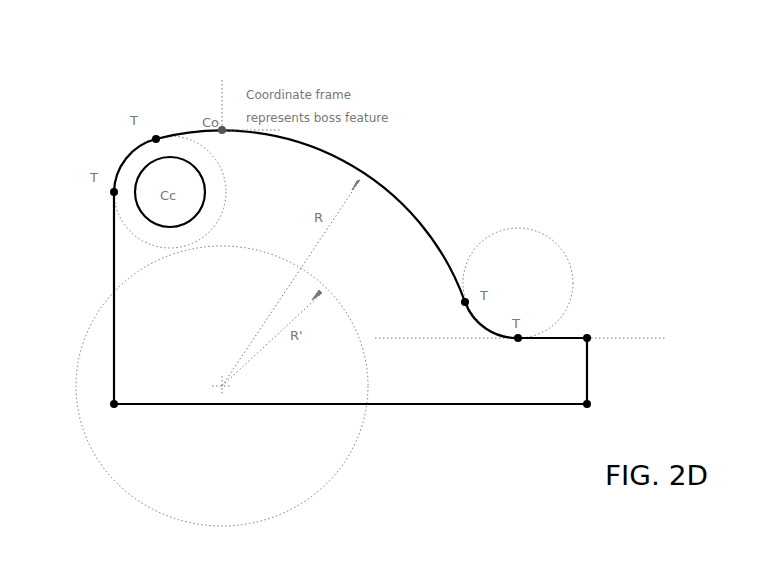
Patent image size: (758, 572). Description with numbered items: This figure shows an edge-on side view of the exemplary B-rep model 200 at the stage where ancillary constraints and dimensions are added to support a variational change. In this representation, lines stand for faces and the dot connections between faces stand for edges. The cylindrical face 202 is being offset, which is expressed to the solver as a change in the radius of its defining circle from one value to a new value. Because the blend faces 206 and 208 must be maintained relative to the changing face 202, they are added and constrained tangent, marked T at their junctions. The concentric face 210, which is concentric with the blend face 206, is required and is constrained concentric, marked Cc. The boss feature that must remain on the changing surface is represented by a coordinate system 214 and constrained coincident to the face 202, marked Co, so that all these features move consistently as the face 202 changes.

The 3D model 200 is at (420, 405).
The face 202 is at (438, 238).
The blend face 206 is at (127, 150).
The blend face 208 is at (488, 332).
The concentric face 210 is at (143, 218).
The coordinate system 214 is at (230, 122).